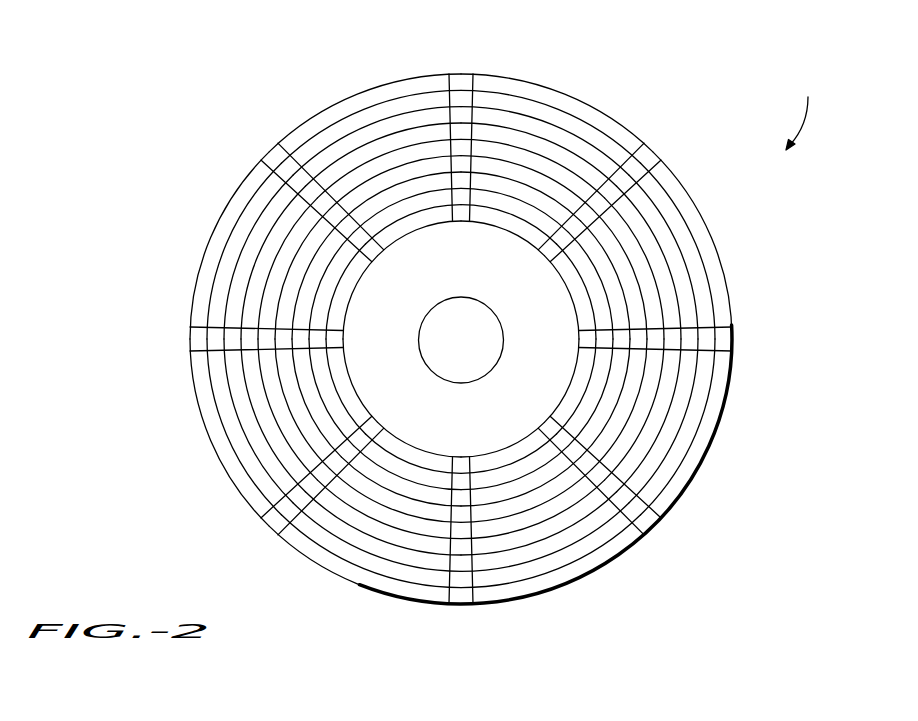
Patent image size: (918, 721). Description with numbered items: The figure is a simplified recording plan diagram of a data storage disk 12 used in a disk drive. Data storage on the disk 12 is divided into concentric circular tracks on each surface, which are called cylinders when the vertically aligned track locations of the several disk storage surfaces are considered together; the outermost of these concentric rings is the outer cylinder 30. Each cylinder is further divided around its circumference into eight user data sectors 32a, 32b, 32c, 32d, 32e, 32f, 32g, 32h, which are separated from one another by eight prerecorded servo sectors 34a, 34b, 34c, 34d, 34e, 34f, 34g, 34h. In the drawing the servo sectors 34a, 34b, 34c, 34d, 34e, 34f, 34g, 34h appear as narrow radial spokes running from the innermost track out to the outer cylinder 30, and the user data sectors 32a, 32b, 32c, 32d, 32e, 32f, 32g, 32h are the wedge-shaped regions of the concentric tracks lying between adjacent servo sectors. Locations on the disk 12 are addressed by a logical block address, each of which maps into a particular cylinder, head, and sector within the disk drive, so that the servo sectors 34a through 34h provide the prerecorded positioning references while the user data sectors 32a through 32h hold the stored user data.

The disk 12 is at (805, 111).
The outer cylinder 30 is at (488, 80).
The user data sector 32a is at (580, 107).
The user data sector 32b is at (703, 232).
The user data sector 32c is at (707, 453).
The user data sector 32d is at (605, 553).
The user data sector 32e is at (348, 575).
The user data sector 32f is at (223, 457).
The user data sector 32g is at (218, 235).
The user data sector 32h is at (365, 98).
The servo sector 34a is at (460, 80).
The servo sector 34b is at (648, 150).
The servo sector 34c is at (742, 338).
The servo sector 34d is at (647, 518).
The servo sector 34e is at (462, 602).
The servo sector 34f is at (275, 522).
The servo sector 34g is at (197, 343).
The servo sector 34h is at (273, 157).